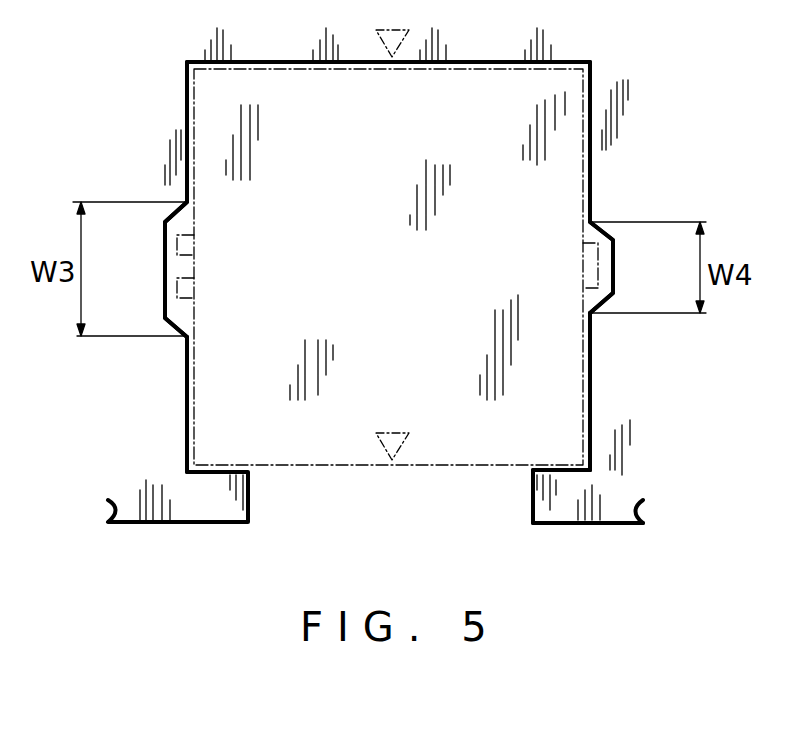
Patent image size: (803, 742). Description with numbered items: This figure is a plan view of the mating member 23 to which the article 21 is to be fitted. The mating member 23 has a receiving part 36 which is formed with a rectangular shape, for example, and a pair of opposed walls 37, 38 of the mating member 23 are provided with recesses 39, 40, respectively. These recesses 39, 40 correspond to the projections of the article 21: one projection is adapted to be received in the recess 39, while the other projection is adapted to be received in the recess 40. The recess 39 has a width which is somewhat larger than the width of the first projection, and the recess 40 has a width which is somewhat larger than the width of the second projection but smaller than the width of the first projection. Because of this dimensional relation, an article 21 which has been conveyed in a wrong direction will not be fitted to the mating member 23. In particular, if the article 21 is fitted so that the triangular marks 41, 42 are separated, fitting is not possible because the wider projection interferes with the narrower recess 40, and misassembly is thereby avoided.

The article 21 is at (300, 154).
The mating member 23 is at (566, 500).
The receiving part 36 is at (562, 62).
The opposed wall 37 is at (192, 412).
The opposed wall 38 is at (592, 401).
The recess 39 is at (166, 292).
The recess 40 is at (611, 262).
The triangular mark 41 is at (392, 450).
The triangular mark 42 is at (396, 42).